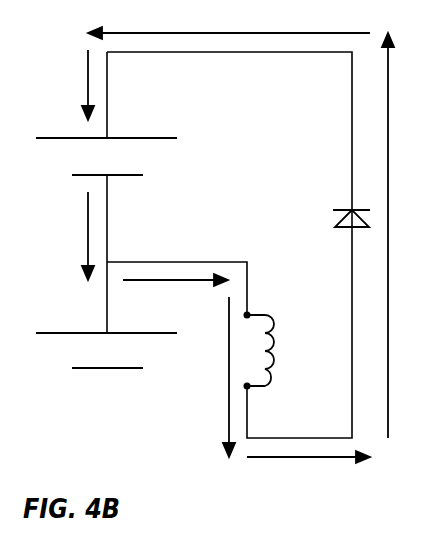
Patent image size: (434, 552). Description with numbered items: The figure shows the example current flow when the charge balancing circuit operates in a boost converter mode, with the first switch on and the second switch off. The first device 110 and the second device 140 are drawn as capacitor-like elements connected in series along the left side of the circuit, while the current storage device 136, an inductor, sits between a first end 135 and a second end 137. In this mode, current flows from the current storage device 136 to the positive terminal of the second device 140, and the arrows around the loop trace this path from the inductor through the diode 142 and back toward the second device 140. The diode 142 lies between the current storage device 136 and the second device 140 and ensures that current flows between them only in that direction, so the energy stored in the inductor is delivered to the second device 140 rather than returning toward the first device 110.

The second device 140 is at (138, 138).
The first device 110 is at (58, 333).
The diode 142 is at (338, 213).
The first end 135 is at (249, 313).
The current storage device 136 is at (273, 352).
The second end 137 is at (249, 389).